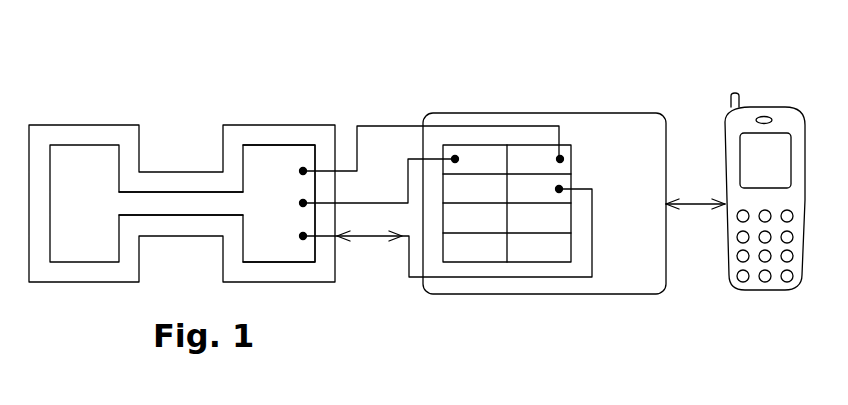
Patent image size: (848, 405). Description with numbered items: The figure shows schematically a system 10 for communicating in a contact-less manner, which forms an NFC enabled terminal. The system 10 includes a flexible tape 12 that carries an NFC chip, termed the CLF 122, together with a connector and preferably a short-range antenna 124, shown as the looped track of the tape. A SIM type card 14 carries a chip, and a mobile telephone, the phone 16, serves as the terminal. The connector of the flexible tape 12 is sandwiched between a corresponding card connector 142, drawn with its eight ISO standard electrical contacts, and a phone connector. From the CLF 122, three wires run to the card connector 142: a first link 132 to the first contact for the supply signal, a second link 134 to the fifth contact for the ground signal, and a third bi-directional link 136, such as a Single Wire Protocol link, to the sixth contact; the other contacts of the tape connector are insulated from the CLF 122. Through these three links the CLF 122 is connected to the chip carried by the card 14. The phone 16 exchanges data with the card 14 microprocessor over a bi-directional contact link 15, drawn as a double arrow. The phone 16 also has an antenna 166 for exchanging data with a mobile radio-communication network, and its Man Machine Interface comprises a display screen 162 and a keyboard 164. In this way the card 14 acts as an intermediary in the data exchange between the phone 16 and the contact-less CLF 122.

The system 10 is at (200, 38).
The flexible tape 12 is at (91, 125).
The short-range antenna 124 is at (173, 192).
The NFC chip (CLF) 122 is at (272, 145).
The second link 134 is at (397, 126).
The first link 132 is at (382, 203).
The third bi-directional link 136 is at (372, 238).
The SIM type card 14 is at (522, 113).
The card connector 142 is at (563, 159).
The bi-directional contact link 15 is at (697, 206).
The mobile telephone 16 is at (746, 198).
The antenna 166 is at (740, 95).
The display screen 162 is at (740, 160).
The keyboard 164 is at (765, 280).